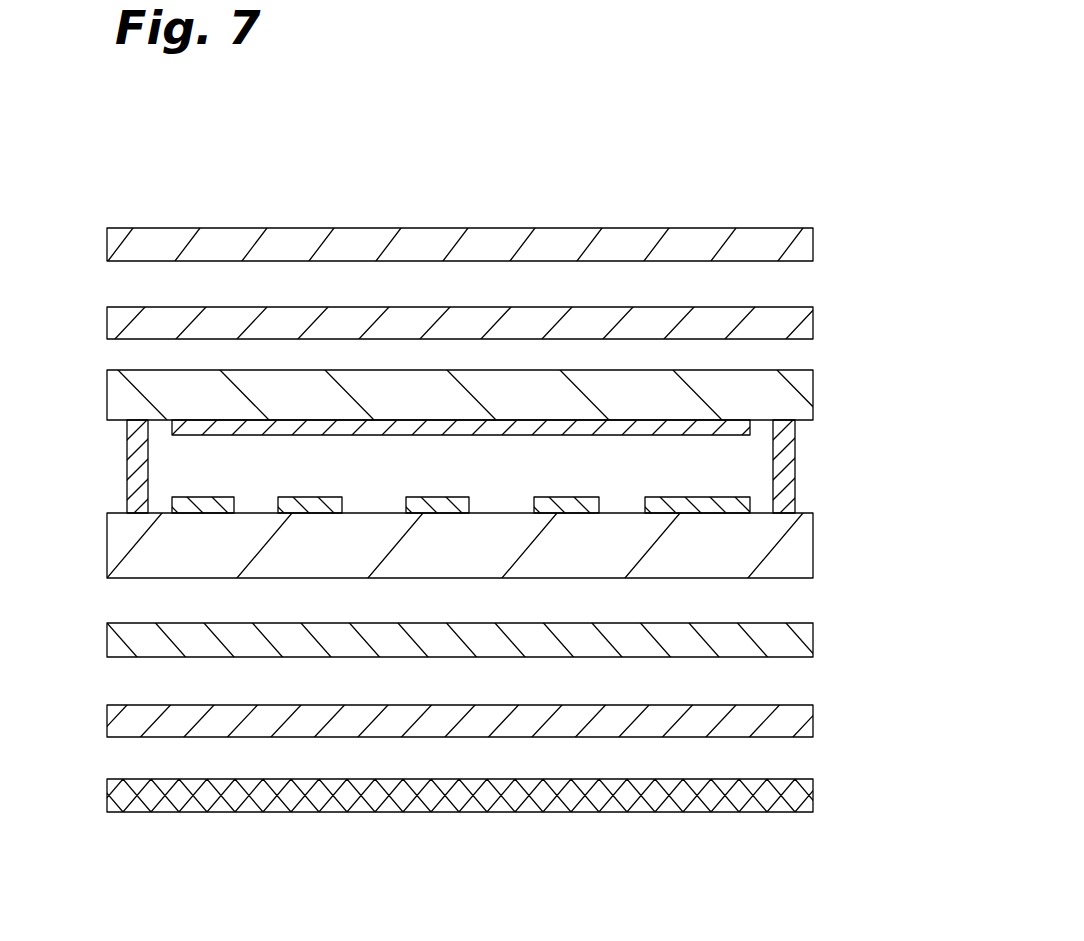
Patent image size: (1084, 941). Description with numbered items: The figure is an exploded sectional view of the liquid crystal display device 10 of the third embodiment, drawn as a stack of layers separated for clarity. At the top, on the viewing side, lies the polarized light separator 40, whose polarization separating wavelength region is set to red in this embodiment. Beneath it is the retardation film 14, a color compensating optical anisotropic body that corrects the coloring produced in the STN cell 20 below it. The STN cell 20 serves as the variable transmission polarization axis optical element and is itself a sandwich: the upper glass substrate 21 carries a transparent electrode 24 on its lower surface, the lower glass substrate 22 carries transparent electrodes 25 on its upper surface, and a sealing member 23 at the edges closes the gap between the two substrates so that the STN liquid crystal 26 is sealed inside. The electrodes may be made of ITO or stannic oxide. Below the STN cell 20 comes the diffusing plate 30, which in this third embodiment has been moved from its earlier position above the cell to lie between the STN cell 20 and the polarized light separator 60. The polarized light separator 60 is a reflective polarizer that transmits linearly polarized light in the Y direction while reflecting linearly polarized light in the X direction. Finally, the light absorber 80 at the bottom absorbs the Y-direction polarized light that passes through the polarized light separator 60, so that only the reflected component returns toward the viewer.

The liquid crystal display device 10 is at (653, 173).
The polarized light separator 40 is at (806, 241).
The retardation film 14 is at (806, 318).
The STN cell 20 is at (530, 462).
The glass substrate 21 is at (800, 382).
The transparent electrode 24 is at (540, 435).
The sealing member 23 is at (795, 477).
The STN liquid crystal 26 is at (712, 463).
The transparent electrodes 25 is at (553, 497).
The glass substrate 22 is at (800, 545).
The diffusing plate 30 is at (805, 633).
The polarized light separator 60 is at (805, 713).
The light absorber 80 is at (813, 785).